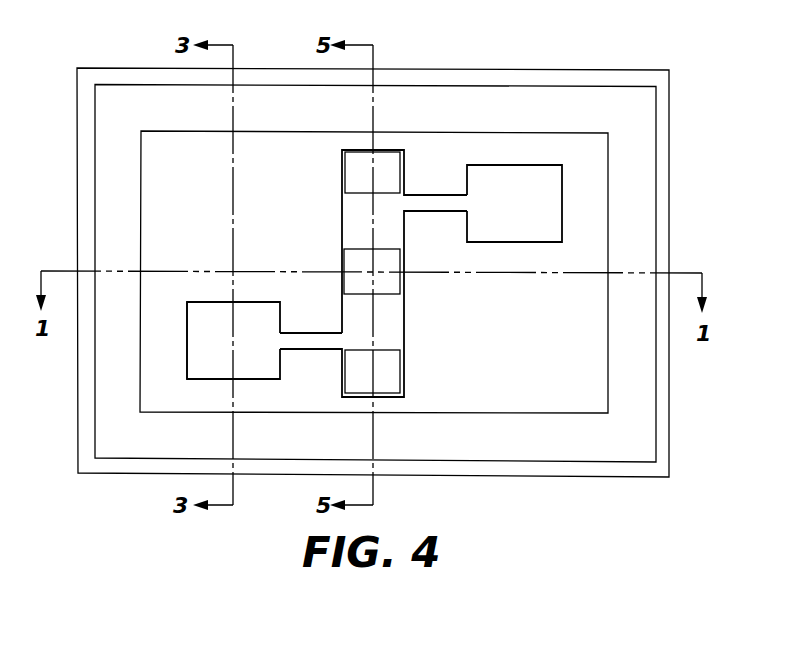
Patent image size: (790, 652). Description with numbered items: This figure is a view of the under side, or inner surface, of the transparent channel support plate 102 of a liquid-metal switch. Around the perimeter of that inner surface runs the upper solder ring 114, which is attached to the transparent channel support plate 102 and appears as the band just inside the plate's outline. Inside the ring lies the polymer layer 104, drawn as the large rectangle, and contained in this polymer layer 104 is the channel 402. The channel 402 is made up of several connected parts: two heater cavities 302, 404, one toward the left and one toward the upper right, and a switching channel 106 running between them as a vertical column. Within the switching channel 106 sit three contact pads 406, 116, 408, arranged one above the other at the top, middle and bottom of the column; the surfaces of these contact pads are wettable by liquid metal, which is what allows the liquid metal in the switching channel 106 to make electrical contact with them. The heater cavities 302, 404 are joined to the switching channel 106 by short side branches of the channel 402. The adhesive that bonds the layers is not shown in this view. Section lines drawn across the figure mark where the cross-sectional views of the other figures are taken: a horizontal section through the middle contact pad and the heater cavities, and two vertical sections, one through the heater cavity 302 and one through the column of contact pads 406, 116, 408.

The transparent channel support plate 102 is at (670, 105).
The upper solder ring 114 is at (645, 420).
The polymer layer 104 is at (152, 150).
The switching channel 106 is at (392, 313).
The contact pad 116 is at (356, 265).
The heater cavity 302 is at (200, 318).
The channel 402 is at (187, 361).
The heater cavity 404 is at (522, 175).
The contact pad 406 is at (356, 176).
The contact pad 408 is at (392, 370).